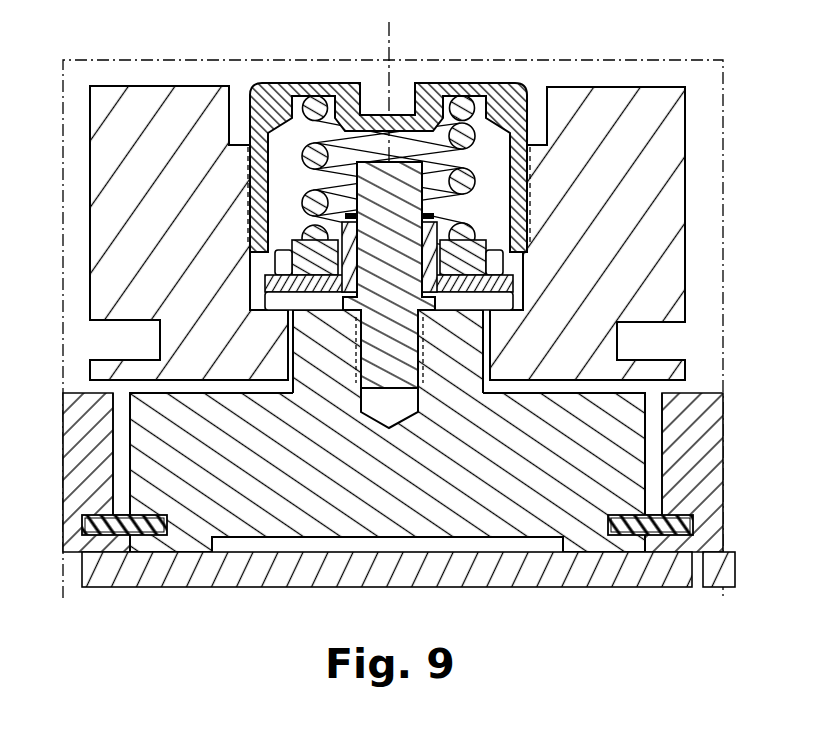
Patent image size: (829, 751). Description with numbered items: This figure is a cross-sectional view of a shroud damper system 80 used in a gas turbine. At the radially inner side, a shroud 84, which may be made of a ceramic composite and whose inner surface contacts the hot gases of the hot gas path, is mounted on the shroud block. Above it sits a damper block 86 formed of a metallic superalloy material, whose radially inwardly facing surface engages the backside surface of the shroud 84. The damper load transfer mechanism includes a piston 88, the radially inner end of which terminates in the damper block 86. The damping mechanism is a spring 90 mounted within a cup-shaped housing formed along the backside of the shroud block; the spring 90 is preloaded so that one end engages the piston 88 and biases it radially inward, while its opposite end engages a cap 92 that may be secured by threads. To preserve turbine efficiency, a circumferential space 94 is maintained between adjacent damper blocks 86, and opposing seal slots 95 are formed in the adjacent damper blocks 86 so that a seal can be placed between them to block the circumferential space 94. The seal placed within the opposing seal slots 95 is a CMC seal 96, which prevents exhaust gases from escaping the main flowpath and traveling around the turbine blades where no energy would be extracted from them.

The shroud damper system 80 is at (660, 633).
The shroud 84 is at (256, 572).
The damper block 86 is at (492, 497).
The piston 88 is at (468, 345).
The spring 90 is at (452, 102).
The cap 92 is at (278, 100).
The circumferential space 94 is at (653, 400).
The seal slot 95 is at (172, 516).
The CMC seal 96 is at (122, 530).